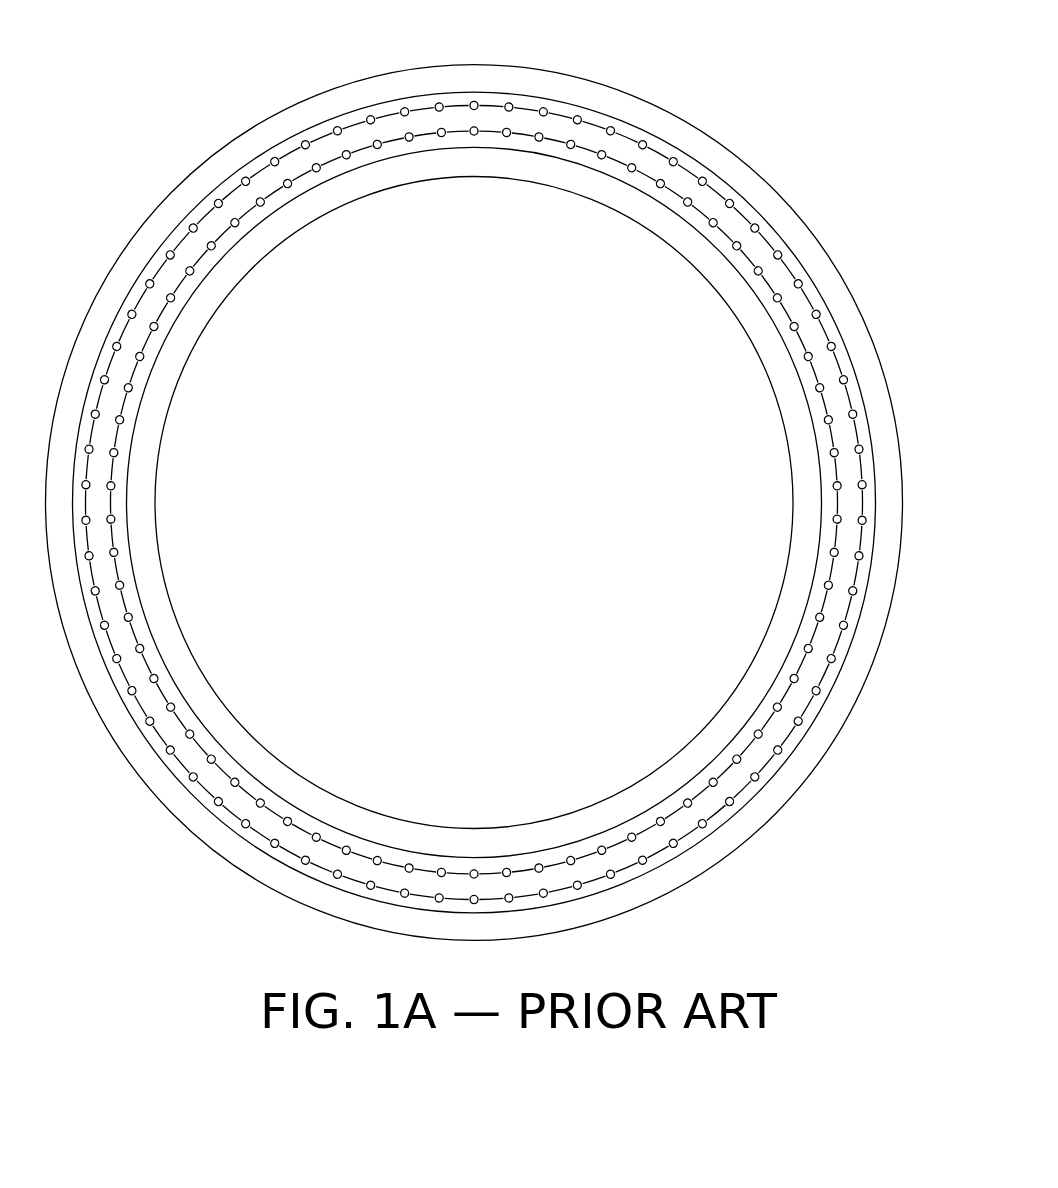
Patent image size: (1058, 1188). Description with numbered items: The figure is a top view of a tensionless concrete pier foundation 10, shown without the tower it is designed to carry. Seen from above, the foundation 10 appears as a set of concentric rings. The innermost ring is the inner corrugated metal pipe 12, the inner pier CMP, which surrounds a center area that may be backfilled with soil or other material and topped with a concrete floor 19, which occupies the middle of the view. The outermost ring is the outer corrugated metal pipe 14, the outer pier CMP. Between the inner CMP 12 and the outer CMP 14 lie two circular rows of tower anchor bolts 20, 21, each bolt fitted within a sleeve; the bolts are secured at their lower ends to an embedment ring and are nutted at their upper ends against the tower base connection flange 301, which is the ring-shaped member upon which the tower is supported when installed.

The concrete pier foundation 10 is at (117, 213).
The inner corrugated metal pipe 12 is at (745, 333).
The outer corrugated metal pipe 14 is at (852, 285).
The concrete floor 19 is at (488, 517).
The tower anchor bolt 20 is at (340, 127).
The tower anchor bolt 21 is at (215, 250).
The tower base connection flange 301 is at (845, 469).